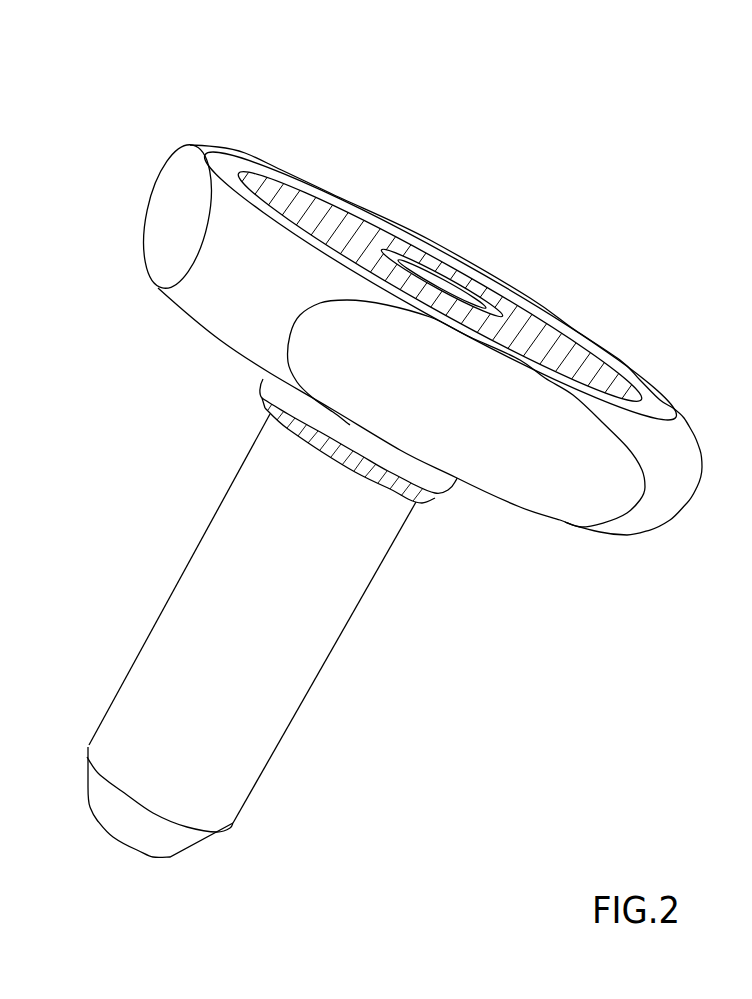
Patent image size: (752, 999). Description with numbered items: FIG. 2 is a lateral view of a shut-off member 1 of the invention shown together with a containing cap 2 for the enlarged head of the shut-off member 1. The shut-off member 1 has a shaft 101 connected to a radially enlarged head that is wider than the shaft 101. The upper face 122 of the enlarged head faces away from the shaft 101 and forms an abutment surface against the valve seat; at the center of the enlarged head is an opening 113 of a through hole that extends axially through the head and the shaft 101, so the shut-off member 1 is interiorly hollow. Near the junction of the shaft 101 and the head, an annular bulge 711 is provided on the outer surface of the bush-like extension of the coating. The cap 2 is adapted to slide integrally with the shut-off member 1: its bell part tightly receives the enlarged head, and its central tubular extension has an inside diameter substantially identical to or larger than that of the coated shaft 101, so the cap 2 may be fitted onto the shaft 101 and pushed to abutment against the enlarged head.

The shut-off member 1 is at (369, 457).
The cap 2 is at (369, 277).
The shaft 101 is at (353, 613).
The opening 113 is at (448, 285).
The upper face 122 is at (360, 236).
The annular bulge 711 is at (268, 414).